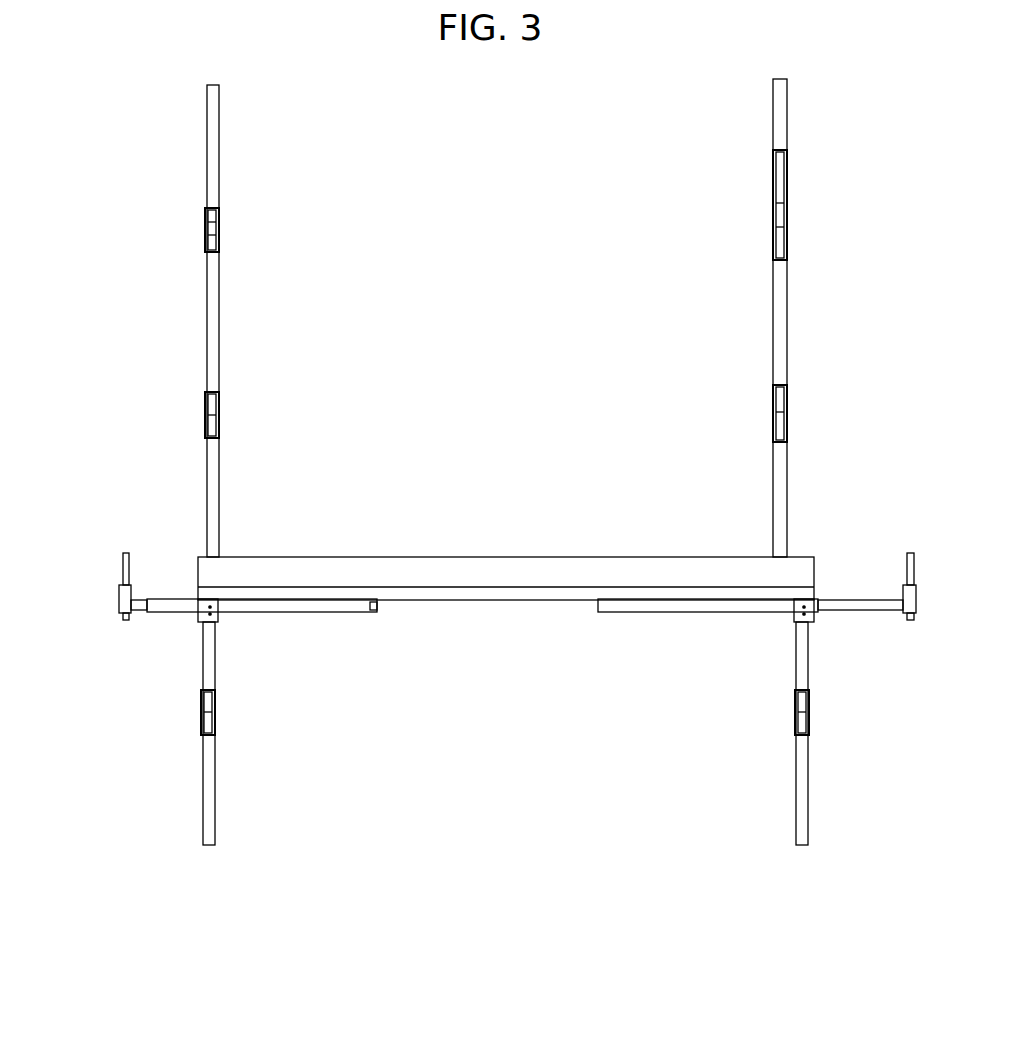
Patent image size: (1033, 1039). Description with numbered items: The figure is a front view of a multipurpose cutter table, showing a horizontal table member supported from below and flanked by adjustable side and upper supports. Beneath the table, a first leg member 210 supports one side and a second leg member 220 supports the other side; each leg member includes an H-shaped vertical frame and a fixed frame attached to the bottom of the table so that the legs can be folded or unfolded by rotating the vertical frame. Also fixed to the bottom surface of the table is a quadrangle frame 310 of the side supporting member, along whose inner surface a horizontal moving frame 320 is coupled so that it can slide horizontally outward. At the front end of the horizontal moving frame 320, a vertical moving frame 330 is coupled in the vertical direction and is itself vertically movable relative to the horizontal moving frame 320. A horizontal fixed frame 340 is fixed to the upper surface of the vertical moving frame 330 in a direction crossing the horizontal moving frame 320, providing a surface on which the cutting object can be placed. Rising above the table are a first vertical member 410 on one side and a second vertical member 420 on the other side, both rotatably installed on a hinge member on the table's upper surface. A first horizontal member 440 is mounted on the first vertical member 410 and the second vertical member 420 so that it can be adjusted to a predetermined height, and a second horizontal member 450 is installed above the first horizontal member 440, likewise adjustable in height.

The first leg member 210 is at (210, 807).
The second leg member 220 is at (805, 803).
The quadrangle frame 310 is at (300, 606).
The horizontal moving frame 320 is at (143, 603).
The vertical moving frame 330 is at (125, 573).
The horizontal fixed frame 340 is at (124, 557).
The first vertical member 410 is at (216, 490).
The second vertical member 420 is at (775, 460).
The first horizontal member 440 is at (221, 418).
The second horizontal member 450 is at (221, 222).